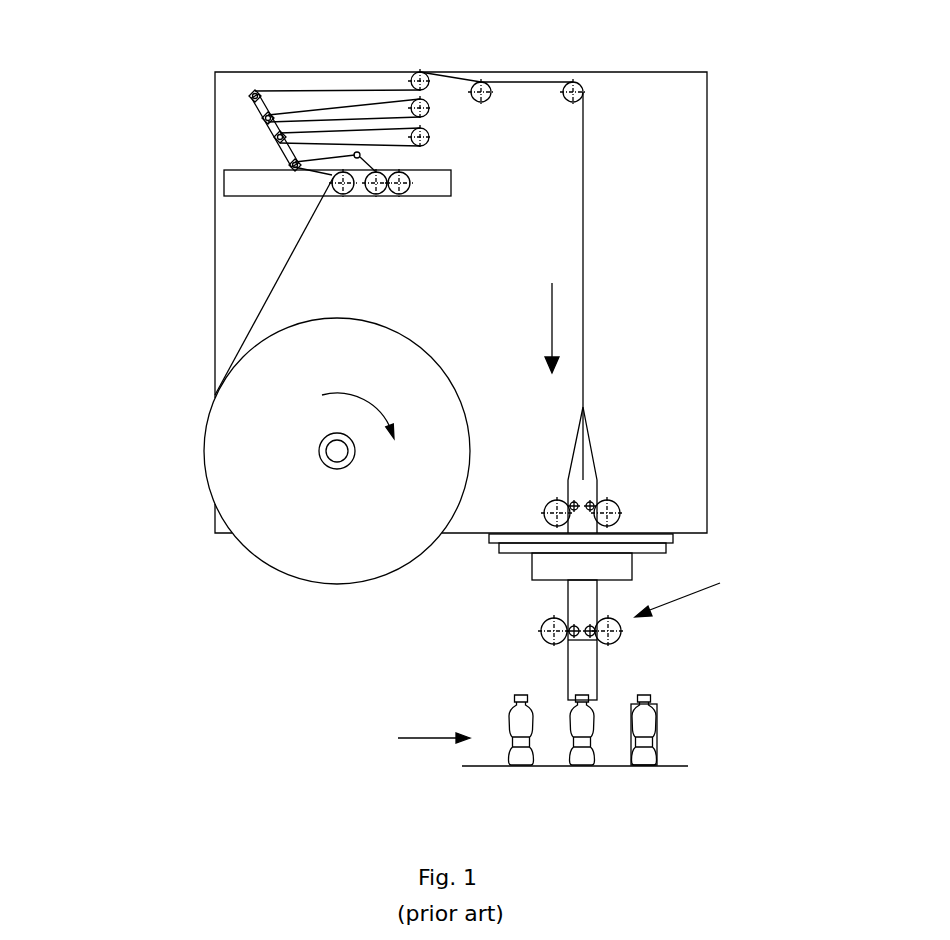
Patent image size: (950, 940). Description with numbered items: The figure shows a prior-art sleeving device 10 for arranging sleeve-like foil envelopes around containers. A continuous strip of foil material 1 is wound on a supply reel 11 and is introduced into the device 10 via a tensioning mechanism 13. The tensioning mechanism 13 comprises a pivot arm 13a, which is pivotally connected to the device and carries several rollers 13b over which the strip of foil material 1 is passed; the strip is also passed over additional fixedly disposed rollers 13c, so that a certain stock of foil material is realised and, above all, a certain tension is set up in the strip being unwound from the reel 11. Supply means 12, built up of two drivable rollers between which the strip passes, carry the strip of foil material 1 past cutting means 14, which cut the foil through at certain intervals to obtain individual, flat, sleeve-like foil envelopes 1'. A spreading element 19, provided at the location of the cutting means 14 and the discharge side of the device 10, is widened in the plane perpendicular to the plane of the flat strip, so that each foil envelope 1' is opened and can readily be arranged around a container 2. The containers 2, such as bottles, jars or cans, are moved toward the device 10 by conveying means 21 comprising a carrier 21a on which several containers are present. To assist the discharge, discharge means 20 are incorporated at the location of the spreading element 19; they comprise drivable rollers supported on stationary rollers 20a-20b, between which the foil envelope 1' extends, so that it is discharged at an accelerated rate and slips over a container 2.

The continuous strip of foil material 1 is at (454, 295).
The individual sleeve-like foil envelope 1' is at (612, 673).
The container 2 is at (523, 720).
The device 10 is at (230, 248).
The supply reel 11 is at (320, 443).
The supply means or conveying means 12 is at (620, 510).
The tensioning mechanism 13 is at (463, 143).
The pivot arm 13a is at (260, 178).
The rollers 13b is at (294, 167).
The fixedly disposed rollers 13c is at (430, 132).
The cutting means 14 is at (588, 552).
The spreading element 19 is at (588, 470).
The discharge means 20 is at (699, 591).
The drivable rollers and stationary rollers 20a-20b is at (543, 630).
The conveying means 21 is at (428, 685).
The carrier 21a is at (462, 766).